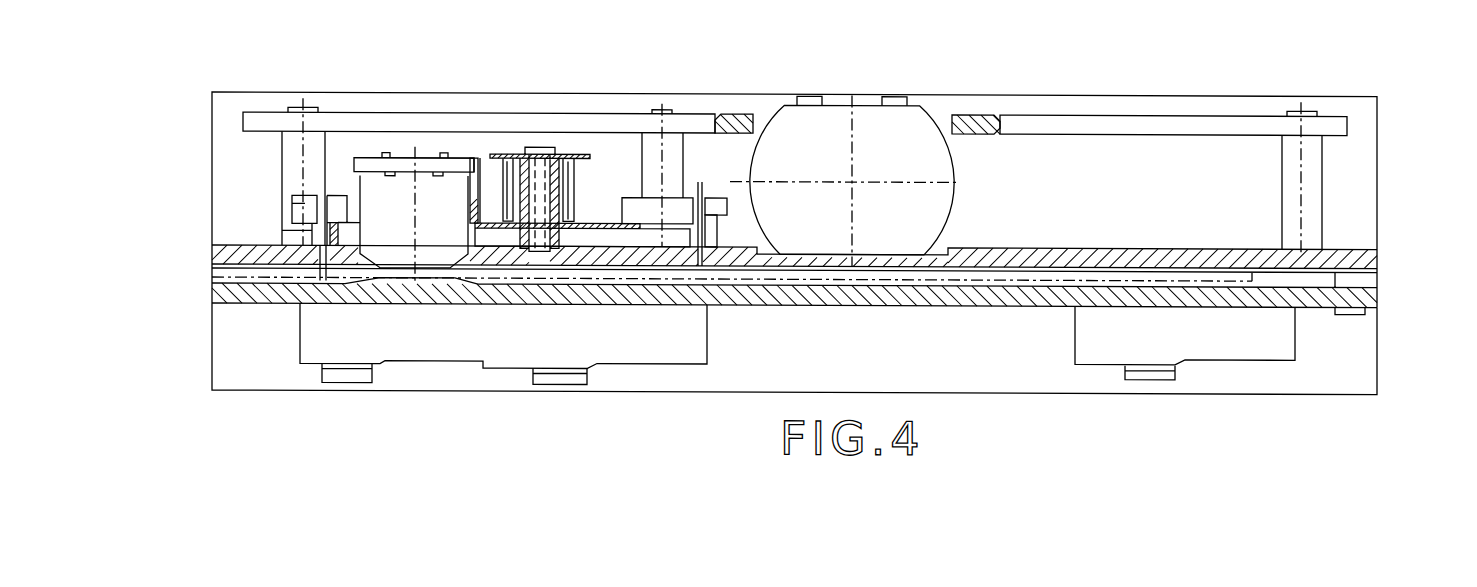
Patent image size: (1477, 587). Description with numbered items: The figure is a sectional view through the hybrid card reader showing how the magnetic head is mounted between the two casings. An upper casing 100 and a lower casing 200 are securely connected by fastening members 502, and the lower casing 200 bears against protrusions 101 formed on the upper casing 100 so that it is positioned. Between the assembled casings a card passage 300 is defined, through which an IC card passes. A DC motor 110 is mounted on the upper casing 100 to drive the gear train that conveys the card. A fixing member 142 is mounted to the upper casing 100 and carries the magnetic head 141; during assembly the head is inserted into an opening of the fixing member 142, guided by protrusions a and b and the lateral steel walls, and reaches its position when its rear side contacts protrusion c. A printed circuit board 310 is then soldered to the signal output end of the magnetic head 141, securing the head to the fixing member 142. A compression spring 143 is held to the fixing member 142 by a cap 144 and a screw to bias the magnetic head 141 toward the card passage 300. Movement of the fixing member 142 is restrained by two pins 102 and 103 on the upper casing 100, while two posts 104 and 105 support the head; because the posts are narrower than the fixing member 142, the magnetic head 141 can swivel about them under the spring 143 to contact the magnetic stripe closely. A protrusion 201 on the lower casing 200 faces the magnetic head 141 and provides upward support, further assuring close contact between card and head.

The upper casing 100 is at (1370, 174).
The protrusions 101 is at (1357, 308).
The pin 102 is at (712, 195).
The pin 103 is at (290, 203).
The post 104 is at (714, 235).
The post 105 is at (306, 232).
The DC motor 110 is at (918, 123).
The magnetic head 141 is at (428, 185).
The fixing member 142 is at (622, 198).
The compression spring 143 is at (573, 170).
The cap 144 is at (513, 157).
The lower casing 200 is at (213, 346).
The protrusion 201 is at (380, 284).
The card passage 300 is at (213, 272).
The printed circuit board 310 is at (1192, 120).
The fastening members 502 is at (332, 378).
The protrusion a is at (352, 207).
The protrusion b is at (478, 222).
The protrusion c is at (403, 168).